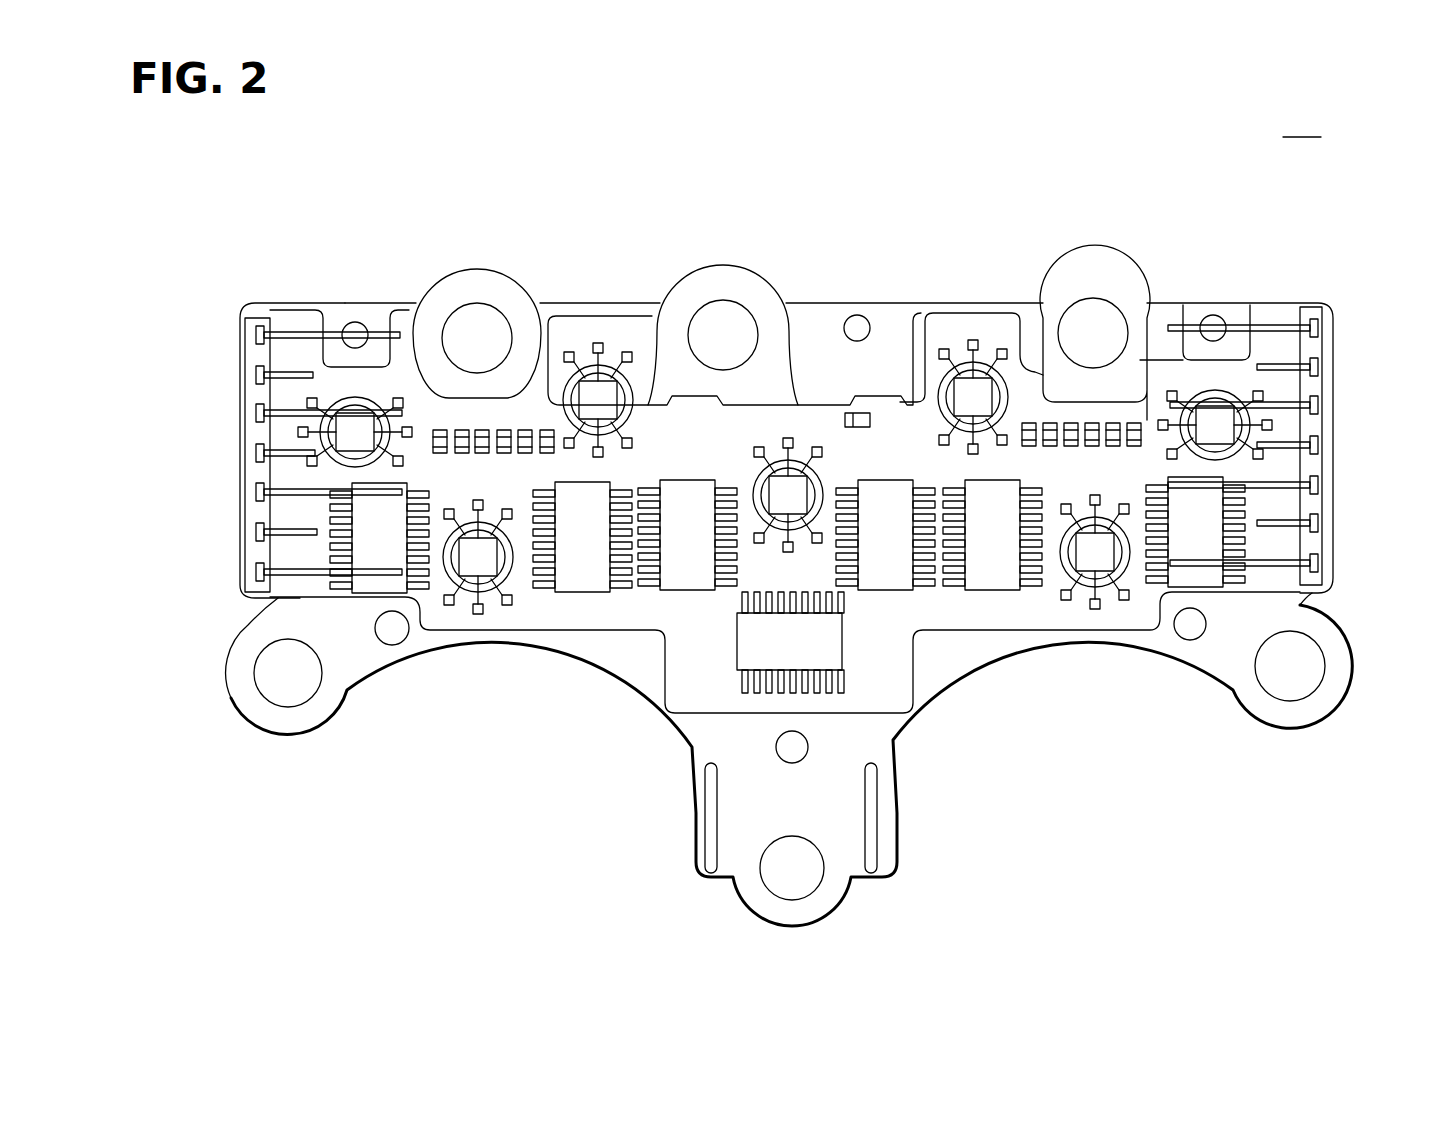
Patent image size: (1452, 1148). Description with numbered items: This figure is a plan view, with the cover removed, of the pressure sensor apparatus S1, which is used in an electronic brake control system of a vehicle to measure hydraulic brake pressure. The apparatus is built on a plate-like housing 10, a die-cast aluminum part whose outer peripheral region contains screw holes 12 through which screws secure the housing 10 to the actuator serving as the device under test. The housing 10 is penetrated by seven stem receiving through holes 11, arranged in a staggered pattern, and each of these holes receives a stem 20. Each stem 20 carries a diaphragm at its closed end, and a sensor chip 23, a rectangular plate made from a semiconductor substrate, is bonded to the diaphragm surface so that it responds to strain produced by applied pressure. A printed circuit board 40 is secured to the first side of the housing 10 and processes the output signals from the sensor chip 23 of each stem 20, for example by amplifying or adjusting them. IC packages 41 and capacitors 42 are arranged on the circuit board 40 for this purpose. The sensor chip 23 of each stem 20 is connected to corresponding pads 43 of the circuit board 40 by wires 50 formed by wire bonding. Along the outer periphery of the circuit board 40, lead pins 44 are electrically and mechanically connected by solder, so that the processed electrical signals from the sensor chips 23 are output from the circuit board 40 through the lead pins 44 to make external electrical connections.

The housing 10 is at (1145, 271).
The stem receiving through hole 11 is at (345, 418).
The screw hole 12 is at (474, 320).
The stem 20 is at (355, 397).
The sensor chip 23 is at (362, 420).
The circuit board 40 is at (883, 716).
The IC package 41 is at (375, 560).
The capacitor 42 is at (540, 325).
The pad 43 is at (411, 428).
The lead pin 44 is at (260, 331).
The wire 50 is at (397, 397).
The pressure sensor apparatus S1 is at (1294, 184).